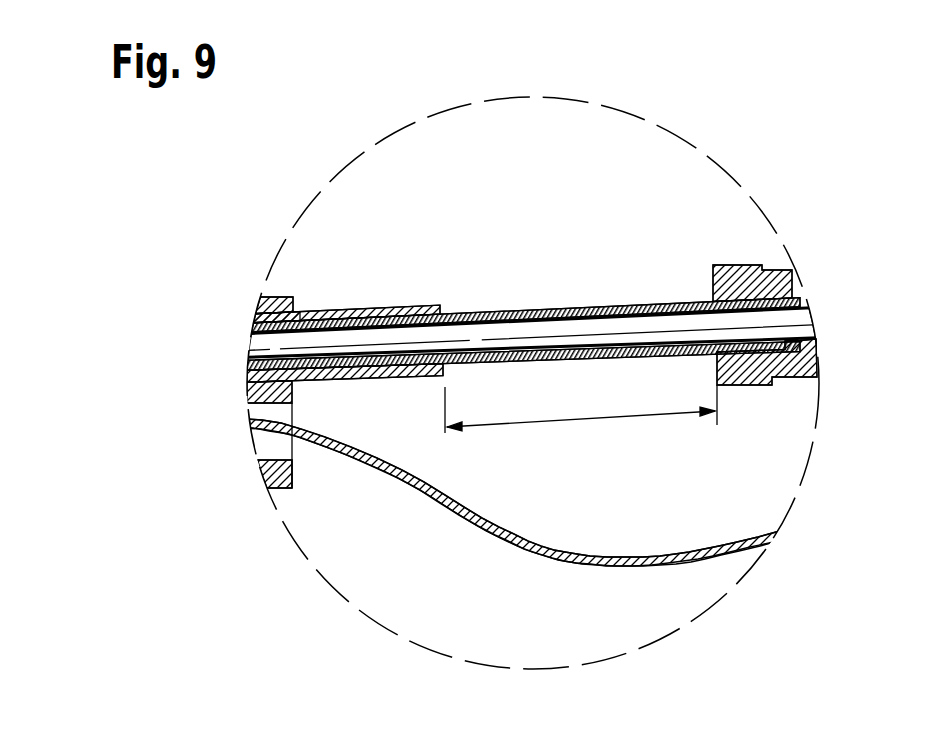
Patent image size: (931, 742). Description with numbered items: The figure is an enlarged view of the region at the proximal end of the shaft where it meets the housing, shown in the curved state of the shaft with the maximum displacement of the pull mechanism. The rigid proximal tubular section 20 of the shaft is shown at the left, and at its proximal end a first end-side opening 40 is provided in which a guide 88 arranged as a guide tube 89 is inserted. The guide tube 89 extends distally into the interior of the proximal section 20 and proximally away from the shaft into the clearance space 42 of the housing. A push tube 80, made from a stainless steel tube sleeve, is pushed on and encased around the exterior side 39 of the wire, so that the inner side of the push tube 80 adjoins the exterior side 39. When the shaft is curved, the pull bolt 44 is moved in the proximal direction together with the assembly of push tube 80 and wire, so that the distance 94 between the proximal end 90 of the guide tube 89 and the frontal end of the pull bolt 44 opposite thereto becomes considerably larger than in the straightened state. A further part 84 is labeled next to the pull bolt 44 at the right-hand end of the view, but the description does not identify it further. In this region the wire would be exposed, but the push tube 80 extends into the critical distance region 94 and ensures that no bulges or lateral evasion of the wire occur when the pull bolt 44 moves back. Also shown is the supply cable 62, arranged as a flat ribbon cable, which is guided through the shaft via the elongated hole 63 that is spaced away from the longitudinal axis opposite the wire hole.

The rigid proximal tubular section 20 is at (268, 300).
The exterior side 39 is at (624, 327).
The first end-side opening 40 is at (295, 307).
The clearance space 42 is at (533, 383).
The pull bolt 44 is at (778, 287).
The supply cable 62 is at (484, 524).
The hole 63 is at (284, 448).
The push tube 80 is at (567, 302).
The lower end fitting 84 is at (812, 347).
The guide 88 is at (243, 382).
The guide tube 89 is at (378, 307).
The proximal end 90 is at (453, 305).
The distance 94 is at (583, 420).